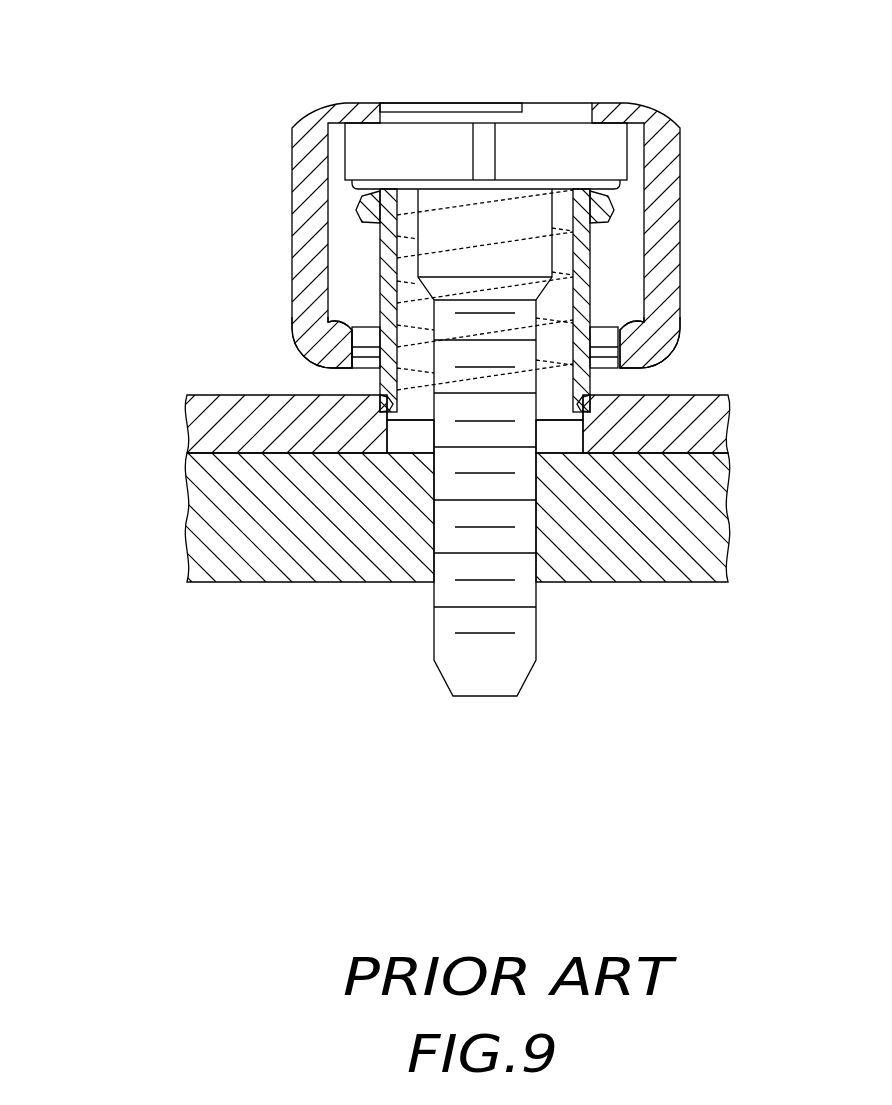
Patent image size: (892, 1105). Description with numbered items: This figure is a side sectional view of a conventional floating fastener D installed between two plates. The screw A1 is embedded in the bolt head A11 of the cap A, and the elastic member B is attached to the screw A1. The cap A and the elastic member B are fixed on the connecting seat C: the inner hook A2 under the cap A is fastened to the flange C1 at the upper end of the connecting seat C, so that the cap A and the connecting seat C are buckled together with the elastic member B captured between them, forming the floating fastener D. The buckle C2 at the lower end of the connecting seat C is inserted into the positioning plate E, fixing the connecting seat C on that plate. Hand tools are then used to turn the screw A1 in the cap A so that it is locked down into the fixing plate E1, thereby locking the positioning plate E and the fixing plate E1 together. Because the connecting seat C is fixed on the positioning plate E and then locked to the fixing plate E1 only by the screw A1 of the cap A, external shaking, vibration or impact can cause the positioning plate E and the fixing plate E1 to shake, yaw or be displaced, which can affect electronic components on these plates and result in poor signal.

The floating fastener D is at (511, 348).
The cap A is at (665, 215).
The screw A1 is at (424, 633).
The bolt head A11 is at (552, 142).
The inner hook A2 is at (622, 345).
The elastic member B is at (540, 325).
The connecting seat C is at (390, 273).
The flange C1 is at (372, 206).
The buckle C2 is at (577, 408).
The positioning plate E is at (200, 432).
The fixing plate E1 is at (195, 482).